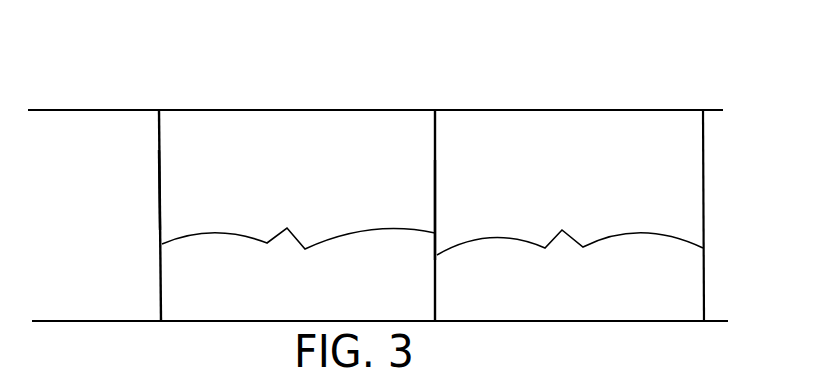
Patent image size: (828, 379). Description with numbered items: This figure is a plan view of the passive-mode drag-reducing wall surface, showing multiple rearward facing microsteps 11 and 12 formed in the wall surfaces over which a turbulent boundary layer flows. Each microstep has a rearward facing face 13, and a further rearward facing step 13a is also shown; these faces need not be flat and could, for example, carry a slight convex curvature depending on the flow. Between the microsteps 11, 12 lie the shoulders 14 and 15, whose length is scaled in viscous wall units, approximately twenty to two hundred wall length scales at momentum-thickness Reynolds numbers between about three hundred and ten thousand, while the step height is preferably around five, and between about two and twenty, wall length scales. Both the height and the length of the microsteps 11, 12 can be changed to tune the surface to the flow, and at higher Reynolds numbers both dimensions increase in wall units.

The microstep 11 is at (160, 112).
The microstep 12 is at (436, 151).
The rearward facing face 13 is at (434, 185).
The rearward facing step 13a is at (158, 191).
The shoulder 14 is at (562, 230).
The shoulder 15 is at (287, 228).